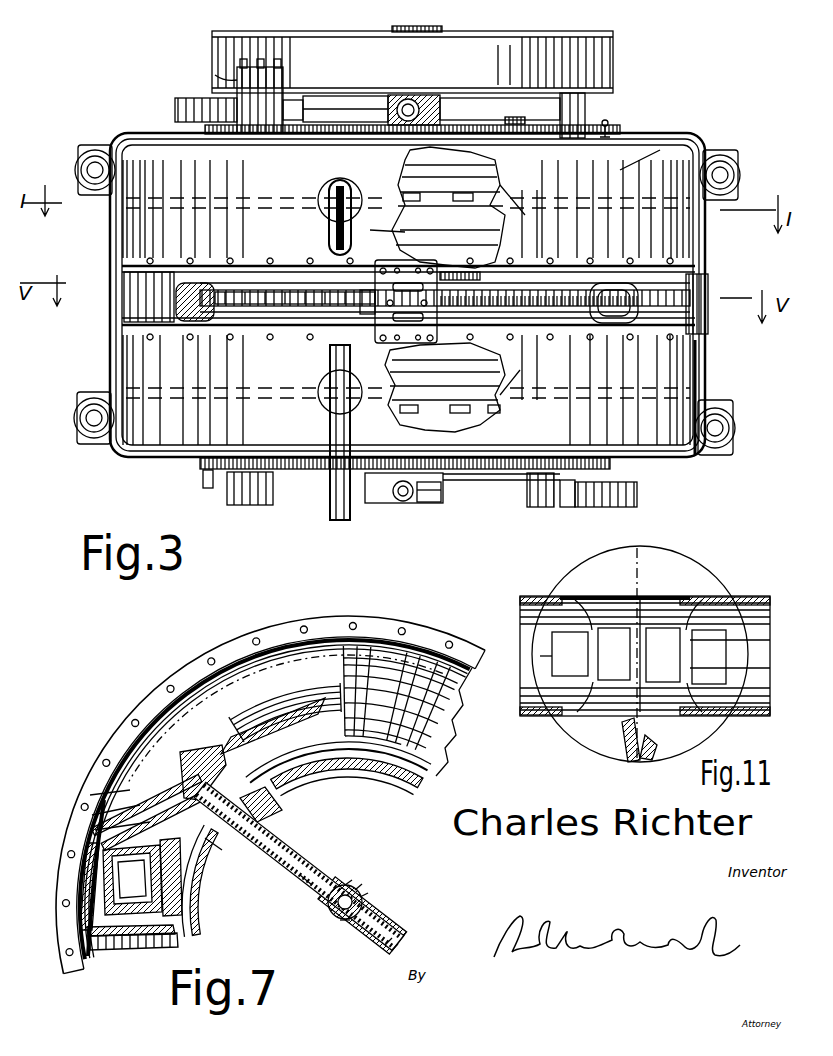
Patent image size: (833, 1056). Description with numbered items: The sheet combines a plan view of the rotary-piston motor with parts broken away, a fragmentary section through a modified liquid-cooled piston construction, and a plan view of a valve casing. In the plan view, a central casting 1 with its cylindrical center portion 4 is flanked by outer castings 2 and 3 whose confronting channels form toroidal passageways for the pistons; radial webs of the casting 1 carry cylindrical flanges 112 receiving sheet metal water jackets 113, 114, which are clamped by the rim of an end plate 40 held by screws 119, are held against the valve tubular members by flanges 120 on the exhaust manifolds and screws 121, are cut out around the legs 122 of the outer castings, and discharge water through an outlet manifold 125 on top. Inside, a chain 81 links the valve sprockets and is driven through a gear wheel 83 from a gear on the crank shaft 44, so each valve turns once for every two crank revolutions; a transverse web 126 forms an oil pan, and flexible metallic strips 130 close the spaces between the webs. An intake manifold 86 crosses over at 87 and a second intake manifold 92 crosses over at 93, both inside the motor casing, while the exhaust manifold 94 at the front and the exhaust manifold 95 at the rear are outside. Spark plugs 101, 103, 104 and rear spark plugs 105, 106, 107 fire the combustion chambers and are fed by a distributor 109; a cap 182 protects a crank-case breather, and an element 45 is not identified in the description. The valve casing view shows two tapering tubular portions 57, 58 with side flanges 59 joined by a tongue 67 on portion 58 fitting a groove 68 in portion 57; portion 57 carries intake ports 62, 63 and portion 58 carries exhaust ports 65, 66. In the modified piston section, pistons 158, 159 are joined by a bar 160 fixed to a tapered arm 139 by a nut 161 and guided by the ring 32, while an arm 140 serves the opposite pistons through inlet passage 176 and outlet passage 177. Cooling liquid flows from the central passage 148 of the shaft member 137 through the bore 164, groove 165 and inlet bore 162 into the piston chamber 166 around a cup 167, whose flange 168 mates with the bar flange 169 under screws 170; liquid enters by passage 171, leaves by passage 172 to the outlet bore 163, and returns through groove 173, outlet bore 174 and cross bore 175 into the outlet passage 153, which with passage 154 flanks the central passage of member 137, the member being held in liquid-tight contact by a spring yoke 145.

In FIG. 3, the central casting 1 is at (387, 235).
In FIG. 7, the central casting 1 is at (140, 698).
In FIG. 3, the outer casting 2 is at (430, 420).
In FIG. 3, the outer casting 3 is at (410, 182).
In FIG. 3, the cylindrical center portion 4 is at (540, 270).
In FIG. 7, the ring 32 is at (288, 780).
In FIG. 3, the end plate 40 is at (450, 500).
In FIG. 3, the crank shaft 44 is at (432, 30).
In FIG. 3, the motor housing 45 is at (613, 78).
In FIG. 11, the tubular portion 57 is at (524, 632).
In FIG. 11, the tubular portion 58 is at (730, 600).
In FIG. 11, the side flanges 59 is at (618, 550).
In FIG. 11, the intake port 62 is at (556, 656).
In FIG. 11, the intake port 63 is at (612, 628).
In FIG. 11, the exhaust port 65 is at (724, 662).
In FIG. 11, the exhaust port 66 is at (666, 628).
In FIG. 11, the tongue 67 is at (642, 740).
In FIG. 11, the groove 68 is at (630, 755).
In FIG. 3, the chain 81 is at (495, 290).
In FIG. 3, the gear wheel 83 is at (372, 335).
In FIG. 3, the intake manifold 86 is at (558, 330).
In FIG. 3, the crossing over 87 is at (700, 352).
In FIG. 3, the second intake manifold 92 is at (345, 258).
In FIG. 3, the crossing over 93 is at (200, 330).
In FIG. 3, the exhaust manifold 94 is at (178, 108).
In FIG. 3, the exhaust manifold 95 is at (638, 495).
In FIG. 3, the spark plug 101 is at (290, 85).
In FIG. 3, the spark plug 103 is at (608, 125).
In FIG. 3, the spark plug 104 is at (212, 128).
In FIG. 3, the spark plug 105 is at (548, 505).
In FIG. 3, the spark plug 106 is at (595, 485).
In FIG. 3, the spark plug 107 is at (206, 480).
In FIG. 3, the distributor 109 is at (237, 82).
In FIG. 3, the cylindrical flanges 112 is at (490, 238).
In FIG. 3, the water jacket 113 is at (195, 455).
In FIG. 3, the water jacket 114 is at (618, 172).
In FIG. 3, the screws 119 is at (512, 126).
In FIG. 3, the flanges 120 is at (315, 114).
In FIG. 3, the screws 121 is at (283, 108).
In FIG. 3, the legs 122 is at (80, 152).
In FIG. 3, the outlet manifold 125 is at (327, 200).
In FIG. 3, the transverse web 126 is at (125, 320).
In FIG. 3, the flexible metallic strips 130 is at (705, 283).
In FIG. 7, the central member 137 is at (365, 895).
In FIG. 7, the arm 139 is at (290, 843).
In FIG. 7, the arm 140 is at (375, 915).
In FIG. 3, the spring yoke 145 is at (440, 500).
In FIG. 7, the passage 148 is at (325, 905).
In FIG. 7, the outlet passage 153 is at (355, 890).
In FIG. 7, the outlet passage 154 is at (345, 920).
In FIG. 7, the piston 158 is at (85, 890).
In FIG. 7, the piston 159 is at (383, 650).
In FIG. 7, the bar 160 is at (290, 716).
In FIG. 7, the nut 161 is at (203, 745).
In FIG. 7, the inlet bore 162 is at (210, 845).
In FIG. 7, the outlet bore 163 is at (90, 795).
In FIG. 7, the bore 164 is at (305, 880).
In FIG. 7, the groove 165 is at (190, 785).
In FIG. 7, the inner chamber 166 is at (150, 950).
In FIG. 7, the cup 167 is at (178, 925).
In FIG. 7, the flange 168 is at (100, 850).
In FIG. 7, the flange 169 is at (95, 830).
In FIG. 7, the screws 170 is at (92, 815).
In FIG. 7, the passage 171 is at (205, 878).
In FIG. 7, the passage 172 is at (93, 868).
In FIG. 7, the groove 173 is at (100, 765).
In FIG. 7, the outlet bore 174 is at (280, 828).
In FIG. 7, the cross bore 175 is at (350, 885).
In FIG. 7, the inlet passage 176 is at (385, 945).
In FIG. 7, the outlet passage 177 is at (392, 950).
In FIG. 3, the cap 182 is at (415, 100).